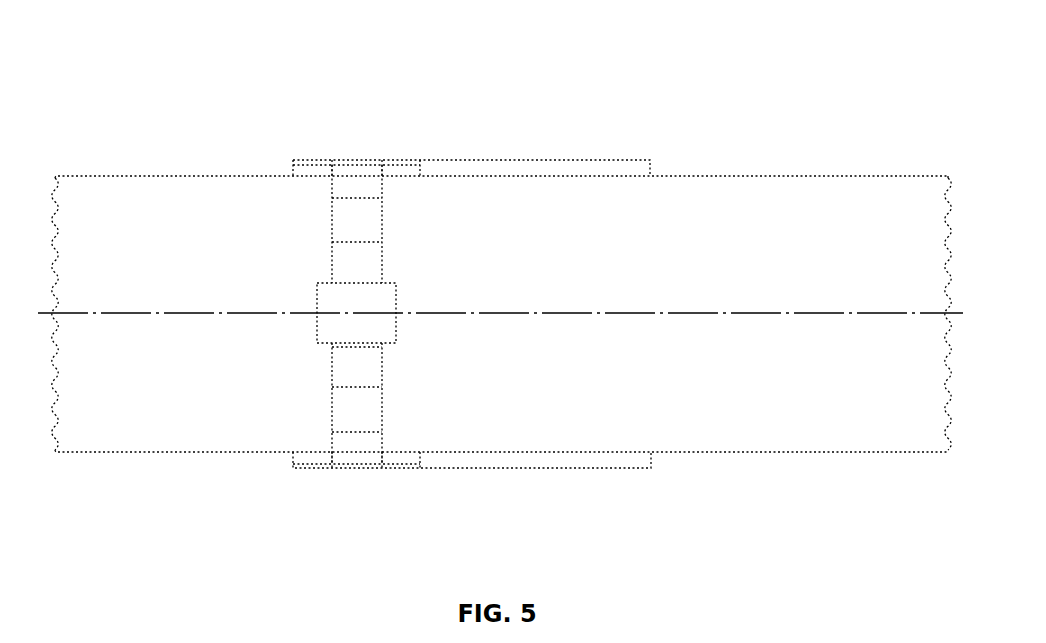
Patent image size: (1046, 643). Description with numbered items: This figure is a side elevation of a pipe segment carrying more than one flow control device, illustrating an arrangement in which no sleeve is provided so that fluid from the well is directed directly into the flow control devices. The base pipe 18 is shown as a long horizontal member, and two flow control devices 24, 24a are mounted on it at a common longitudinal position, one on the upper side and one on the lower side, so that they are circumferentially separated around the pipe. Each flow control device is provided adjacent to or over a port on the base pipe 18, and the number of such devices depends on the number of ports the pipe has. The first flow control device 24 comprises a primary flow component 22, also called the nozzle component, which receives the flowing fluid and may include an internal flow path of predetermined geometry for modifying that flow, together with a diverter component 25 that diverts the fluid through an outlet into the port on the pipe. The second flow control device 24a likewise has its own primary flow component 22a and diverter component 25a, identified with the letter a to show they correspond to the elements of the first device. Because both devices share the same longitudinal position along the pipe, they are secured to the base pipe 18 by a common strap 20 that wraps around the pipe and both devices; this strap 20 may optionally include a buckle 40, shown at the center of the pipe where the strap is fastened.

The base pipe 18 is at (252, 202).
The strap 20 is at (367, 187).
The primary flow component 22 is at (573, 170).
The primary flow component 22a is at (523, 463).
The flow control device 24 is at (512, 146).
The flow control device 24a is at (598, 488).
The diverter component 25 is at (320, 170).
The diverter component 25a is at (313, 462).
The buckle 40 is at (389, 305).